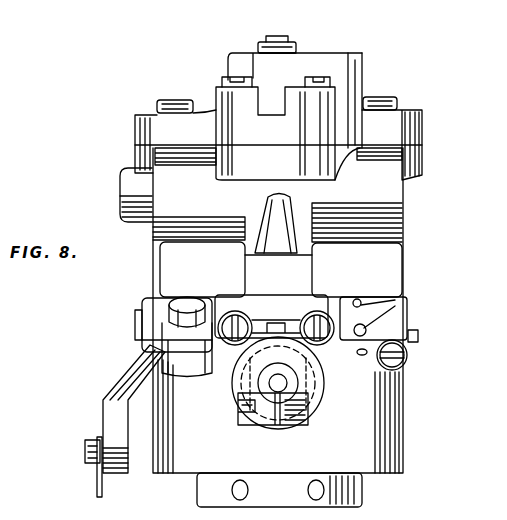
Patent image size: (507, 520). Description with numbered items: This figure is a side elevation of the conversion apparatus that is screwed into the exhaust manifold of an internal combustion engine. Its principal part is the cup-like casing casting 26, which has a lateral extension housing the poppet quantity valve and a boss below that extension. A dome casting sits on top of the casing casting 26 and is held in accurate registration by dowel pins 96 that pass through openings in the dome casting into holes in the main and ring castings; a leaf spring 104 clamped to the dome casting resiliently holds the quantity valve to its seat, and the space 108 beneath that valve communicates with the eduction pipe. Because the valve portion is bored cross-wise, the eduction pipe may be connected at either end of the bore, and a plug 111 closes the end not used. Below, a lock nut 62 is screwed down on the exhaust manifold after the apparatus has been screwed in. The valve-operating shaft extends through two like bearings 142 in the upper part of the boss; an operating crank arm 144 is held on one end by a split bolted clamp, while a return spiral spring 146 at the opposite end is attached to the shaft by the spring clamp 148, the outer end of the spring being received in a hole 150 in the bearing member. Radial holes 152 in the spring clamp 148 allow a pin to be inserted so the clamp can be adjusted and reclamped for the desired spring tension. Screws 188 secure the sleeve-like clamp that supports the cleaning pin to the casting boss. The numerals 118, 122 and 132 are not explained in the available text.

The casing casting 26 is at (155, 275).
The lock nut 62 is at (197, 486).
The dowel pins 96 is at (186, 100).
The leaf spring 104 is at (294, 50).
The space beneath the valve 108 is at (290, 42).
The plug 111 is at (118, 185).
The cover housing 118 is at (211, 116).
The member 122 is at (9, 435).
The member 132 is at (9, 395).
The bearings 142 is at (162, 350).
The operating crank arm 144 is at (103, 417).
The return spiral spring 146 is at (107, 337).
The spring clamp 148 is at (14, 361).
The hole in the bearing member 150 is at (9, 378).
The radial holes 152 is at (398, 305).
The screws 188 is at (242, 330).